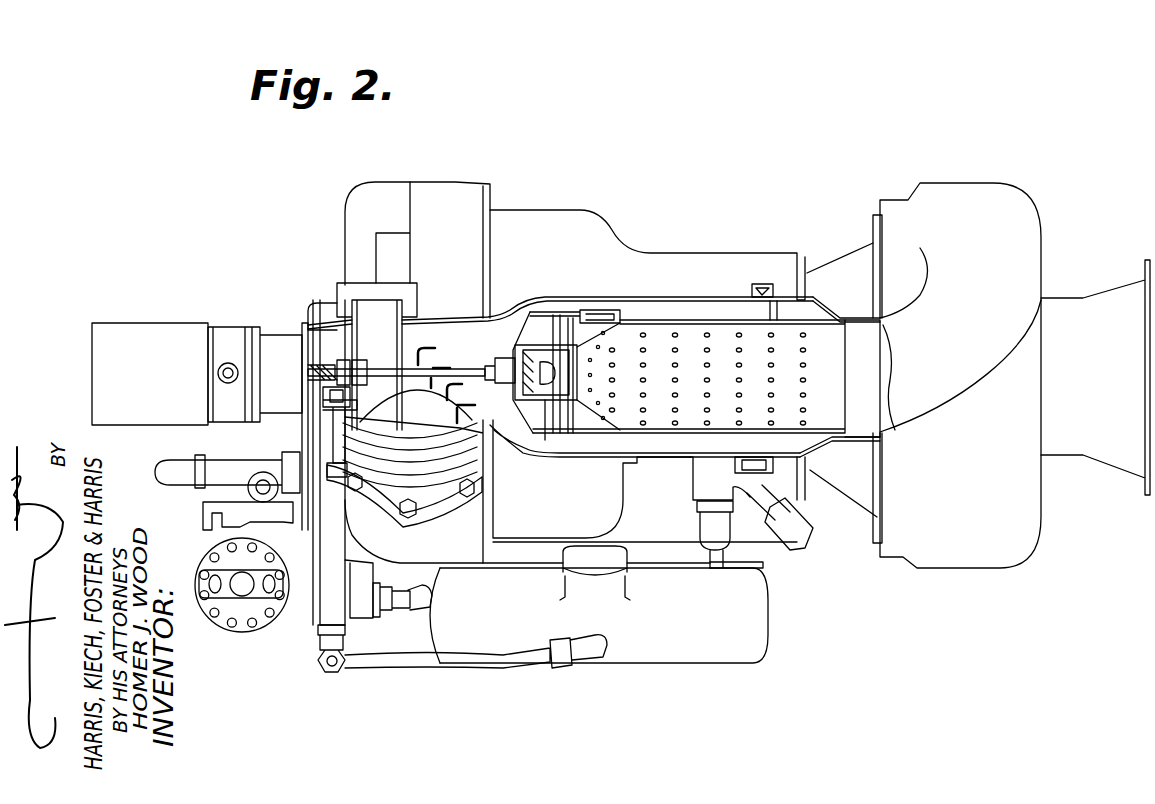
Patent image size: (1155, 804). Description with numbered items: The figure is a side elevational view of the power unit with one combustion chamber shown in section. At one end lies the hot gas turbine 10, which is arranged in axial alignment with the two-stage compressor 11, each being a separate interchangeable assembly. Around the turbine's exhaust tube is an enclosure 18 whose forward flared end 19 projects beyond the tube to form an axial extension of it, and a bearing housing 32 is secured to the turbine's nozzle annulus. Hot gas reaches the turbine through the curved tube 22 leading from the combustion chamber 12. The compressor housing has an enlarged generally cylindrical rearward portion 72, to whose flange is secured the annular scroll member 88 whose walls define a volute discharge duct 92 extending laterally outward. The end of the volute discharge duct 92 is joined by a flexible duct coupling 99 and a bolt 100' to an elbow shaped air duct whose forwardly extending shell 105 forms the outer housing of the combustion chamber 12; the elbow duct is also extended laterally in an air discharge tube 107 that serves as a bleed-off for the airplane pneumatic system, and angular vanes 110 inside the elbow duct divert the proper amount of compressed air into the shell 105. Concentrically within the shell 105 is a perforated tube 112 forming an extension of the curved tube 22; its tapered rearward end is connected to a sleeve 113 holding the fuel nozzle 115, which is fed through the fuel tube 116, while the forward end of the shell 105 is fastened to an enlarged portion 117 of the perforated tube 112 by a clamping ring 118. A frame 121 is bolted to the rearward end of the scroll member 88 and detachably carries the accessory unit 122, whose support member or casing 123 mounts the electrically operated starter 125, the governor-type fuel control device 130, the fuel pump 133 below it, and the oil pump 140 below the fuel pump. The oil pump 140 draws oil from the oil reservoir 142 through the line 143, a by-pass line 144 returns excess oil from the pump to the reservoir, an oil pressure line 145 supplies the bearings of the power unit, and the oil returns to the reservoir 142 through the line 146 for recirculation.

The hot gas turbine 10 is at (1055, 214).
The two-stage compressor 11 is at (520, 190).
The combustion chamber 12 is at (689, 296).
The enclosure 18 is at (1030, 537).
The forward flared end 19 is at (1117, 470).
The curved tube 22 is at (945, 420).
The bearing housing 32 is at (855, 518).
The rearward portion of compressor housing 72 is at (597, 236).
The annular member 88 is at (490, 167).
The volute discharge duct 92 is at (375, 542).
The flexible duct coupling 99 is at (460, 470).
The bolt 100' is at (306, 432).
The shell 105 is at (656, 297).
The air discharge tube 107 is at (310, 327).
The angular vanes 110 is at (436, 353).
The perforated tube 112 is at (712, 318).
The sleeve 113 is at (568, 345).
The fuel nozzle 115 is at (548, 440).
The fuel tube 116 is at (478, 377).
The enlarged portion 117 is at (818, 310).
The clamping ring 118 is at (763, 285).
The frame 121 is at (362, 272).
The accessory unit 122 is at (237, 314).
The support member 123 is at (323, 300).
The electrically operated starter 125 is at (196, 322).
The fuel control device 130 is at (240, 455).
The fuel pump 133 is at (221, 622).
The oil pump 140 is at (315, 637).
The oil tank 142 is at (683, 652).
The line 143 is at (402, 668).
The by-pass line 144 is at (405, 610).
The oil pressure line 145 is at (665, 540).
The line 146 is at (760, 562).